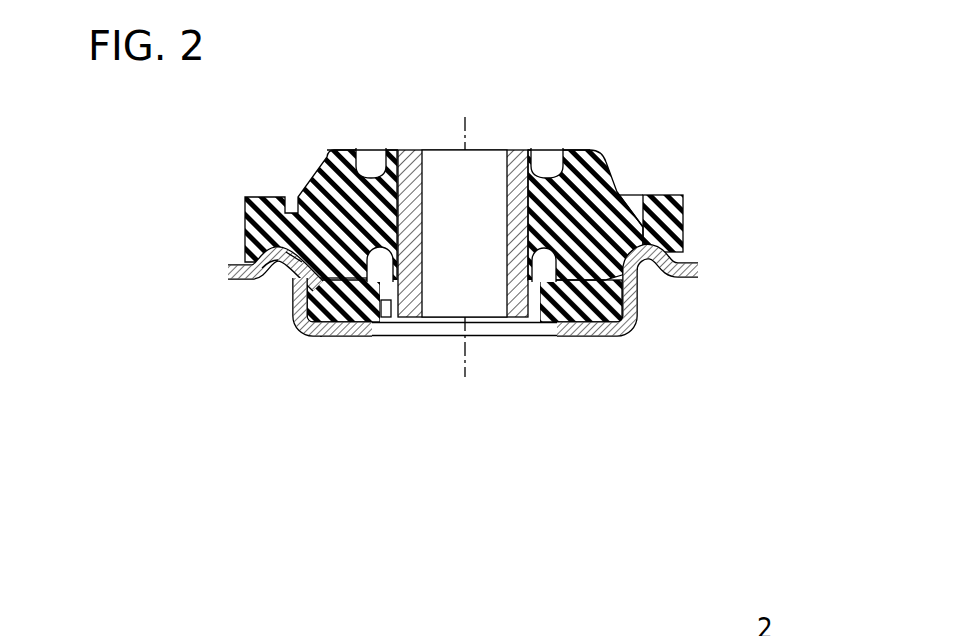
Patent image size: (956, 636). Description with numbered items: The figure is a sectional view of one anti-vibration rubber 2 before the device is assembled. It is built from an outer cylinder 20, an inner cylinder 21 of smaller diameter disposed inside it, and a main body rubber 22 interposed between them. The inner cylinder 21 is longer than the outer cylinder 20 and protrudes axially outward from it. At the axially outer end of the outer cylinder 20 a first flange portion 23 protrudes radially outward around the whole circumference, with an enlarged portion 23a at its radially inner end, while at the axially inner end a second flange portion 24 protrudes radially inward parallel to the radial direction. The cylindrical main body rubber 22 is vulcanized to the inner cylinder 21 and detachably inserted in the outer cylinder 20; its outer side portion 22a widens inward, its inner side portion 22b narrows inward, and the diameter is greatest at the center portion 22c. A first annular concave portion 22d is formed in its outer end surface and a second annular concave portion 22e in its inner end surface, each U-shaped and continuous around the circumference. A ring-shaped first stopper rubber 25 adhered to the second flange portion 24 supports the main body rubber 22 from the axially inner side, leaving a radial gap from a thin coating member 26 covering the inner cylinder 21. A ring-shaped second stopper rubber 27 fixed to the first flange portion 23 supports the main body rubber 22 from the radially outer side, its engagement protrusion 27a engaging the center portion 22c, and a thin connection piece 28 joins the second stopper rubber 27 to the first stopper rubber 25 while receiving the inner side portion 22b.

The anti-vibration rubber 2 is at (703, 100).
The outer cylinder 20 is at (292, 292).
The inner cylinder 21 is at (408, 150).
The main body rubber 22 is at (353, 138).
The outer side portion 22a is at (602, 162).
The inner side portion 22b is at (614, 266).
The center portion 22c is at (645, 230).
The first annular concave portion 22d is at (552, 168).
The second annular concave portion 22e is at (544, 270).
The first flange portion 23 is at (243, 263).
The enlarged portion 23a is at (279, 268).
The second flange portion 24 is at (343, 337).
The first stopper rubber 25 is at (583, 320).
The coating member 26 is at (388, 305).
The second stopper rubber 27 is at (683, 197).
The engagement protrusion 27a is at (633, 213).
The connection piece 28 is at (301, 256).